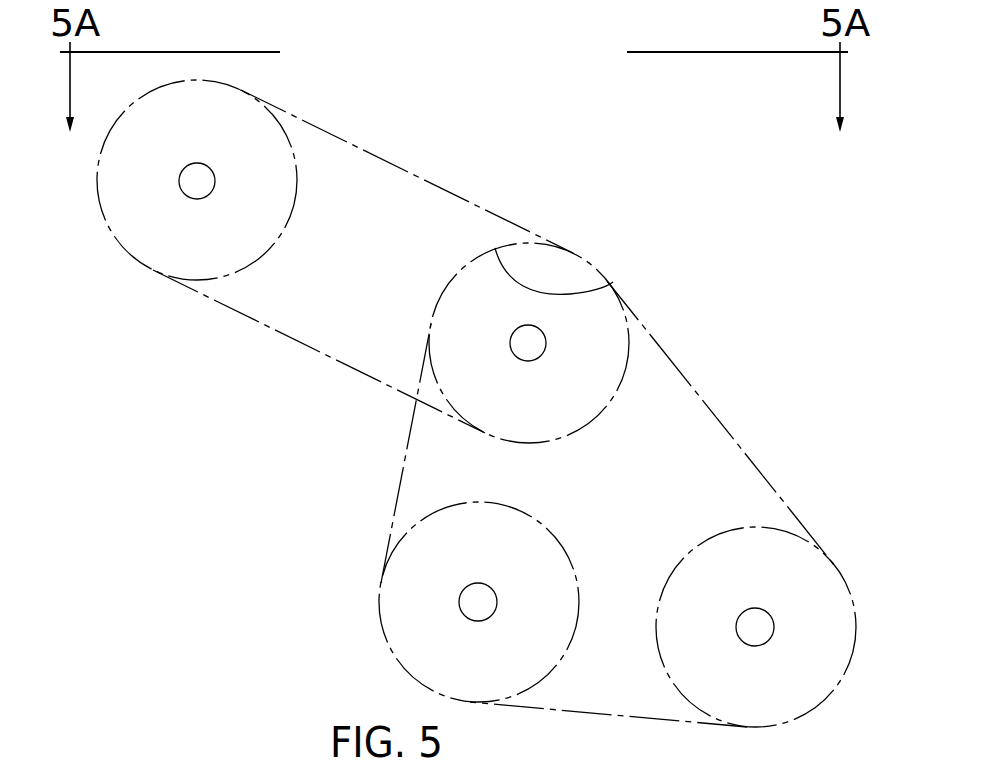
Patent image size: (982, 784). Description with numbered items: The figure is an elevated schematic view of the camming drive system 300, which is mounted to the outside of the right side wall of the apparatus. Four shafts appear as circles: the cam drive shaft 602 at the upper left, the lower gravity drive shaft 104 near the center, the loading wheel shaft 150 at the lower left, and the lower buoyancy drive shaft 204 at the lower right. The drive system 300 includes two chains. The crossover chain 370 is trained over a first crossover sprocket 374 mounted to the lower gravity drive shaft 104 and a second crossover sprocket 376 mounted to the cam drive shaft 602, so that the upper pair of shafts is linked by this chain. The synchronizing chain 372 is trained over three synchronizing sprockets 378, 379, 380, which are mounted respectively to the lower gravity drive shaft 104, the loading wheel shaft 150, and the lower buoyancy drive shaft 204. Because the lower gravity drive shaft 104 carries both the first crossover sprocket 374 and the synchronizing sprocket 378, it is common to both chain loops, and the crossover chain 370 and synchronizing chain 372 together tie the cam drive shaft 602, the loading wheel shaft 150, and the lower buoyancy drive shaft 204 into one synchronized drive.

The drive system 300 is at (493, 396).
The cam drive shaft 602 is at (190, 187).
The lower gravity drive shaft 104 is at (525, 344).
The loading wheel shaft 150 is at (474, 603).
The lower buoyancy drive shaft 204 is at (754, 633).
The crossover chain 370 is at (313, 350).
The synchronizing chain 372 is at (719, 420).
The first crossover sprocket 374 is at (540, 281).
The second crossover sprocket 376 is at (253, 133).
The synchronizing sprocket 378 is at (577, 306).
The synchronizing sprocket 379 is at (423, 561).
The synchronizing sprocket 380 is at (733, 552).